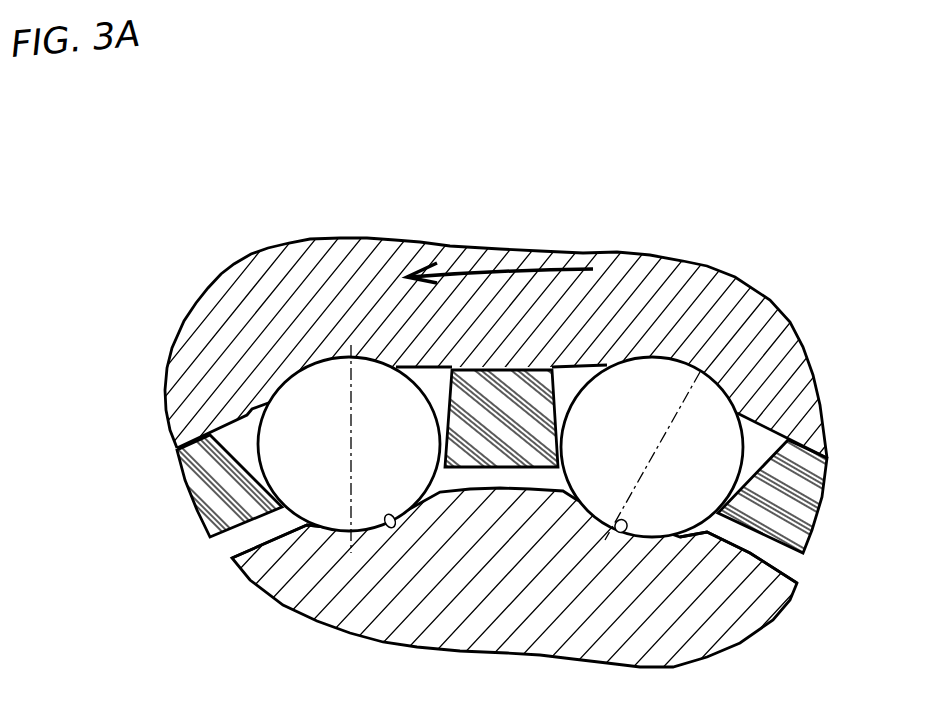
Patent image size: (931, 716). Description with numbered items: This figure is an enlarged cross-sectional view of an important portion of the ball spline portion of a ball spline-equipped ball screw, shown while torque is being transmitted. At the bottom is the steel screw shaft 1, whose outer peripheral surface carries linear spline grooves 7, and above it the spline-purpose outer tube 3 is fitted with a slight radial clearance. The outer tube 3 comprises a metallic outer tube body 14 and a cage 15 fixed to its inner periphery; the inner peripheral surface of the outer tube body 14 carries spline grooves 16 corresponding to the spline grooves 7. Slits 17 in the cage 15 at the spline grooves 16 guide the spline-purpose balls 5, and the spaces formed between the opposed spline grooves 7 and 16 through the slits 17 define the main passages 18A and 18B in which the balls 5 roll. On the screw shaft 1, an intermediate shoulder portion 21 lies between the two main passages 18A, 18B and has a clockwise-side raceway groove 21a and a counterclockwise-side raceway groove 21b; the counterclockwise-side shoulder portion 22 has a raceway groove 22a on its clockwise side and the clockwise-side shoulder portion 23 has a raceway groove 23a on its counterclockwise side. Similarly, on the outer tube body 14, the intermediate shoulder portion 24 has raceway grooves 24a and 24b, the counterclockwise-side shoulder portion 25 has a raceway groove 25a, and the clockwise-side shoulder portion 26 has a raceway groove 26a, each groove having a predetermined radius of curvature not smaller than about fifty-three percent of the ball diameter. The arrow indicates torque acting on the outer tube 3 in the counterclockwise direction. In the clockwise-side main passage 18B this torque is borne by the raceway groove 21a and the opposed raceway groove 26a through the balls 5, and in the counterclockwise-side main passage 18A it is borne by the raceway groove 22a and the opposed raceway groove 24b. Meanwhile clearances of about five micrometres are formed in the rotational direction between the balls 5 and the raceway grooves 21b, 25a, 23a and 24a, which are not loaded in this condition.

The screw shaft 1 is at (520, 594).
The spline-purpose outer tube 3 is at (495, 340).
The spline-purpose balls 5 is at (652, 447).
The spline grooves 7 is at (392, 530).
The outer tube body 14 is at (787, 317).
The cage 15 is at (805, 528).
The spline grooves 16 is at (323, 355).
The slits 17 is at (759, 468).
The main passage 18A is at (423, 368).
The main passage 18B is at (565, 367).
The intermediate shoulder portion 21 is at (497, 493).
The raceway groove 21a is at (578, 504).
The raceway groove 21b is at (441, 496).
The counterclockwise-side shoulder portion 22 is at (242, 568).
The raceway groove 22a is at (329, 533).
The clockwise-side shoulder portion 23 is at (723, 550).
The raceway groove 23a is at (682, 538).
The intermediate shoulder portion 24 is at (500, 362).
The raceway groove 24a is at (608, 360).
The raceway groove 24b is at (377, 357).
The counterclockwise-side shoulder portion 25 is at (167, 384).
The raceway groove 25a is at (261, 392).
The clockwise-side shoulder portion 26 is at (773, 415).
The raceway groove 26a is at (724, 390).